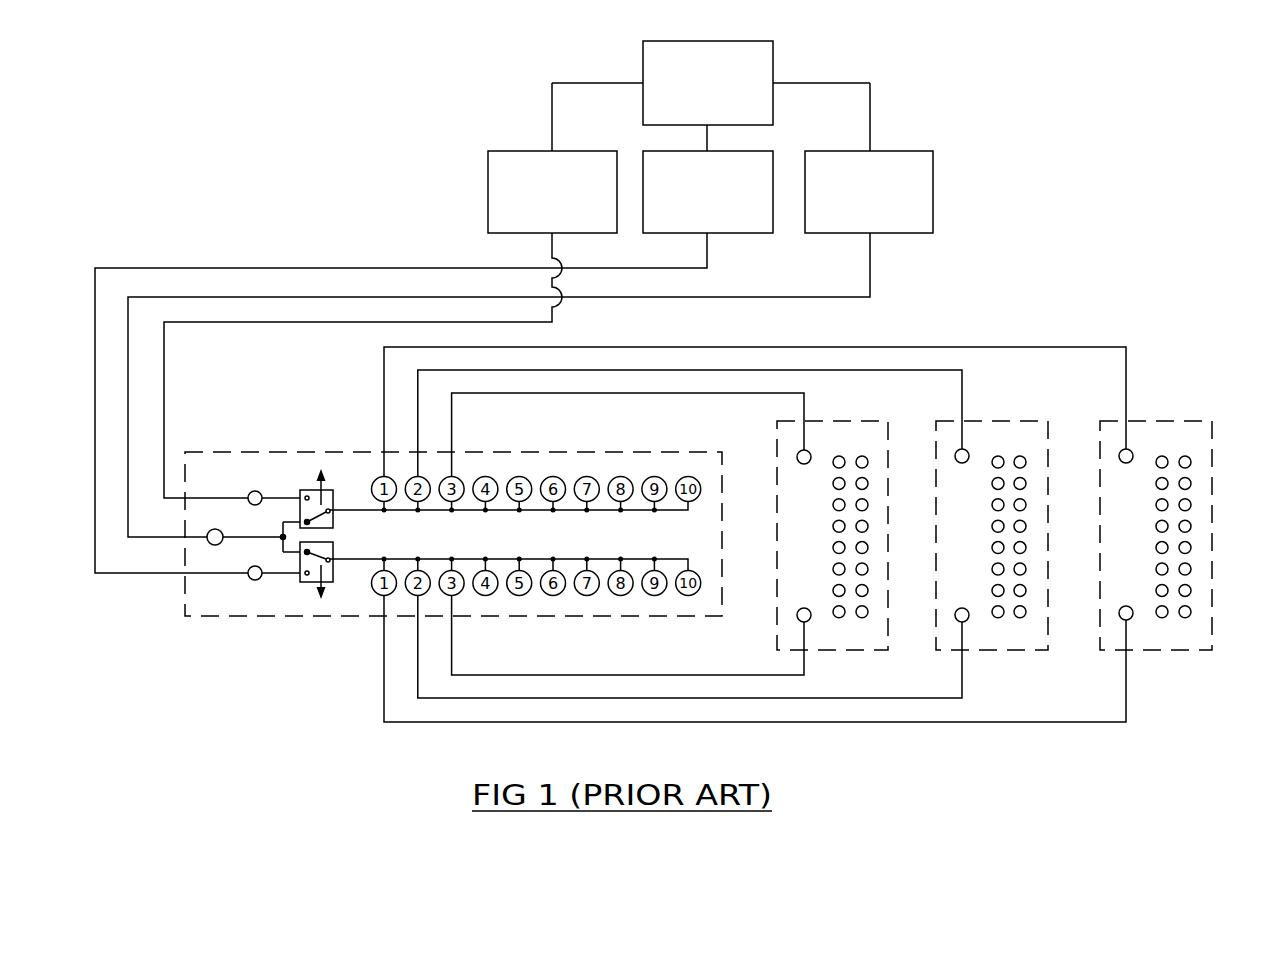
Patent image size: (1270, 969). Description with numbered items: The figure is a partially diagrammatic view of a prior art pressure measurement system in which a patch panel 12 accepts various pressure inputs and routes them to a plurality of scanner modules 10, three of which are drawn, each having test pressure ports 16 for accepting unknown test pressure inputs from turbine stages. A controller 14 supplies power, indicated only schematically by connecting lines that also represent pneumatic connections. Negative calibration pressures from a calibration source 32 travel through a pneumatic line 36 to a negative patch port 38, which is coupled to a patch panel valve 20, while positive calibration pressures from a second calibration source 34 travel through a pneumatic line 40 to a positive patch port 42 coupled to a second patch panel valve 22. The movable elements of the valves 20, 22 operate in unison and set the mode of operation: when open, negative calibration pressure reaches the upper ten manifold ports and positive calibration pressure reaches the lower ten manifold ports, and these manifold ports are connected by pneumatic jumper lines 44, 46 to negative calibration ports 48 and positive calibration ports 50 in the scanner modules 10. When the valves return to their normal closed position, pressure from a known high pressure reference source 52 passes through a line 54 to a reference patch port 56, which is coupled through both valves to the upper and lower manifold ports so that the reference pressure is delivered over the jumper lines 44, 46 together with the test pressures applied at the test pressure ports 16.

The scanner module 10 is at (1100, 562).
The patch panel 12 is at (280, 450).
The controller 14 is at (773, 62).
The test pressure ports 16 is at (1187, 456).
The patch panel valve 20 is at (331, 482).
The patch panel valve 22 is at (308, 592).
The calibration source 32 is at (512, 150).
The calibration source 34 is at (760, 148).
The pneumatic line 36 is at (303, 325).
The negative patch port 38 is at (245, 490).
The pneumatic line 40 is at (285, 267).
The positive patch port 42 is at (243, 580).
The pneumatic jumper lines 44 is at (737, 393).
The pneumatic jumper lines 46 is at (600, 722).
The negative calibration ports 48 is at (1130, 449).
The positive calibration ports 50 is at (1180, 733).
The high pressure reference source 52 is at (933, 150).
The line 54 is at (415, 297).
The reference patch port 56 is at (208, 547).